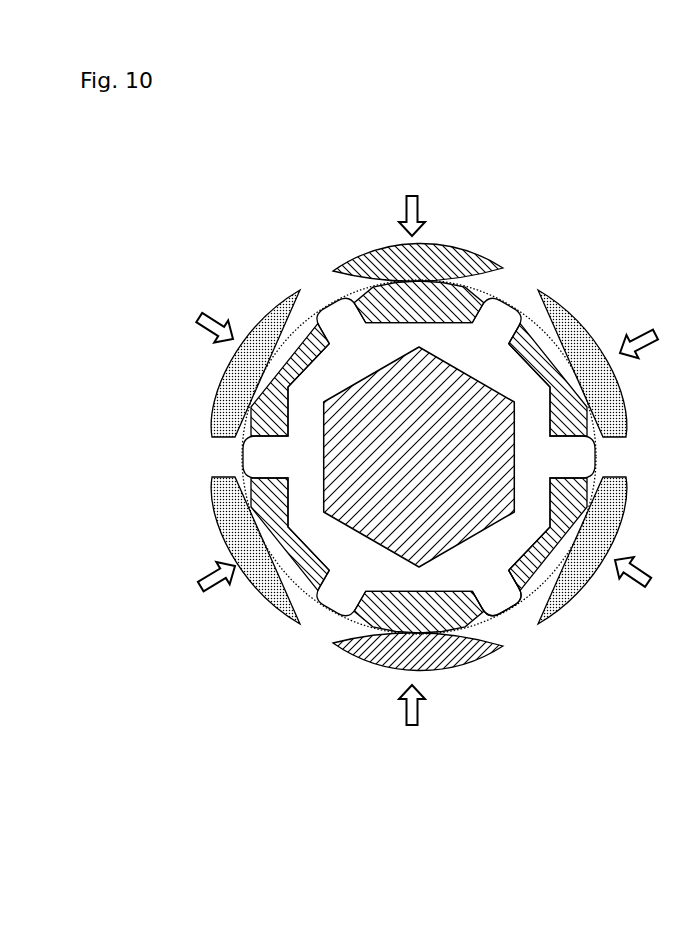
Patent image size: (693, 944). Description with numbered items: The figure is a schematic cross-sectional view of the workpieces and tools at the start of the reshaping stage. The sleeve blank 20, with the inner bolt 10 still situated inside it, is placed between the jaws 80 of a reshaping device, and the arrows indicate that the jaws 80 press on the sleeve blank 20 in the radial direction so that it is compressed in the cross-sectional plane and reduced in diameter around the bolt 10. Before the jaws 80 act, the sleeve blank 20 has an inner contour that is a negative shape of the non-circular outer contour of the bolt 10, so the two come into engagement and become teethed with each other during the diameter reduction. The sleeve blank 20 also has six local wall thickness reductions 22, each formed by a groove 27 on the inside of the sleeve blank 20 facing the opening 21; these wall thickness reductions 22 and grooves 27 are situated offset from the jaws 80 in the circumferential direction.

The inner bolt 10 is at (392, 452).
The sleeve blank 20 is at (535, 340).
The opening 21 is at (342, 368).
The wall thickness reductions 22 is at (512, 622).
The groove 27 is at (500, 597).
The jaws 80 is at (228, 517).